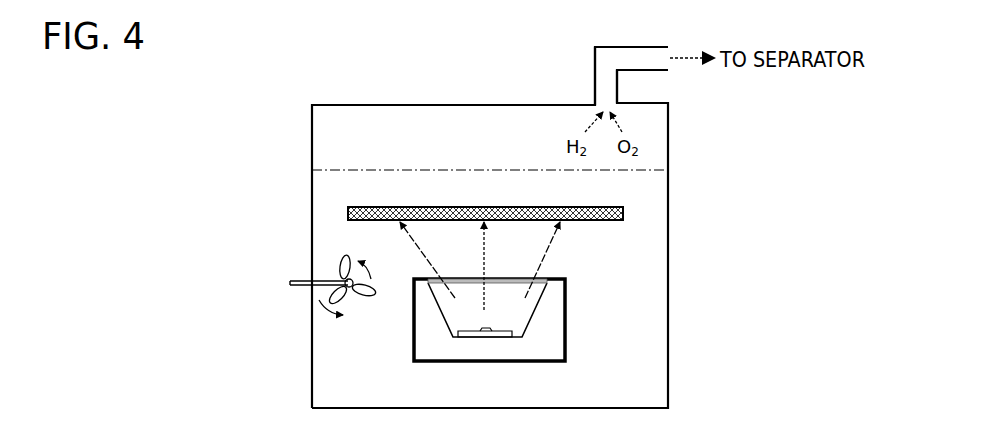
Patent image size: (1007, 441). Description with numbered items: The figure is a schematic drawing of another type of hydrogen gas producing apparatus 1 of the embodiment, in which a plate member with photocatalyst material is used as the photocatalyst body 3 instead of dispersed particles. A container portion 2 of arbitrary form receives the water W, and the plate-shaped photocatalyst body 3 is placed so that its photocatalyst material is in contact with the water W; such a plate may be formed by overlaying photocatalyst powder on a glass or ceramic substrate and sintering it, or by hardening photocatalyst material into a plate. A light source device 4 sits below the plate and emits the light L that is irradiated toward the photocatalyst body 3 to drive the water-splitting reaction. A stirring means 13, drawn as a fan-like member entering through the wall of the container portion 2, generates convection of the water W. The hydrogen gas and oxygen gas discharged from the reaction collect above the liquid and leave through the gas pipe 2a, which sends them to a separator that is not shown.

The hydrogen gas producing apparatus 1 is at (297, 97).
The container portion 2 is at (486, 103).
The gas pipe 2a is at (591, 92).
The photocatalyst body 3 is at (618, 222).
The light source device 4 is at (443, 362).
The stirring means 13 is at (300, 279).
The water W is at (336, 334).
The light L is at (480, 266).